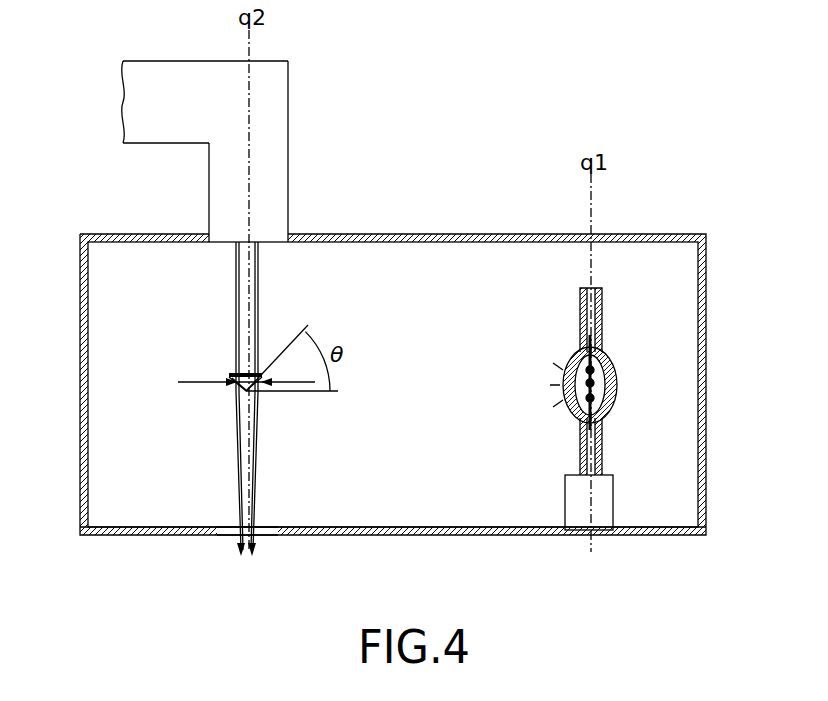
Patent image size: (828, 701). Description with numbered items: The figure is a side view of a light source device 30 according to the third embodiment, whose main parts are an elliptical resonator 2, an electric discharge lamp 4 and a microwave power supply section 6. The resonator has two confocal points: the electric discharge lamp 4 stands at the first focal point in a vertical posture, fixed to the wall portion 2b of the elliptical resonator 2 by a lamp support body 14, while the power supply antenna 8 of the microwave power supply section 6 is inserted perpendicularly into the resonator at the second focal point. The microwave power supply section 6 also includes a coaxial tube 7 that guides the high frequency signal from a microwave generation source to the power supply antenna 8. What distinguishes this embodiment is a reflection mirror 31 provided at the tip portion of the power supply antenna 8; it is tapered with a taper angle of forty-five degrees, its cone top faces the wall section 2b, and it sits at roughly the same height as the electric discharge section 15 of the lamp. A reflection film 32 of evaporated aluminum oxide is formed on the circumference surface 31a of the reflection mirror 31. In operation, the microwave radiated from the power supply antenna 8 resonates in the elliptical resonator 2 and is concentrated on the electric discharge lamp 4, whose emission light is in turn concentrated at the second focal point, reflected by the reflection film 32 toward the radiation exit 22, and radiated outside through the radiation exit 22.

The elliptical resonator 2 is at (675, 231).
The wall portion 2b is at (122, 535).
The electric discharge lamp 4 is at (610, 288).
The microwave power supply section 6 is at (164, 52).
The coaxial tube 7 is at (288, 128).
The power supply antenna 8 is at (259, 305).
The lamp support body 14 is at (605, 510).
The electric discharge section 15 is at (600, 386).
The radiation exit 22 is at (220, 527).
The light source device 30 is at (681, 100).
The reflection mirror 31 is at (228, 394).
The circumference surface 31a is at (243, 393).
The reflection film 32 is at (232, 375).